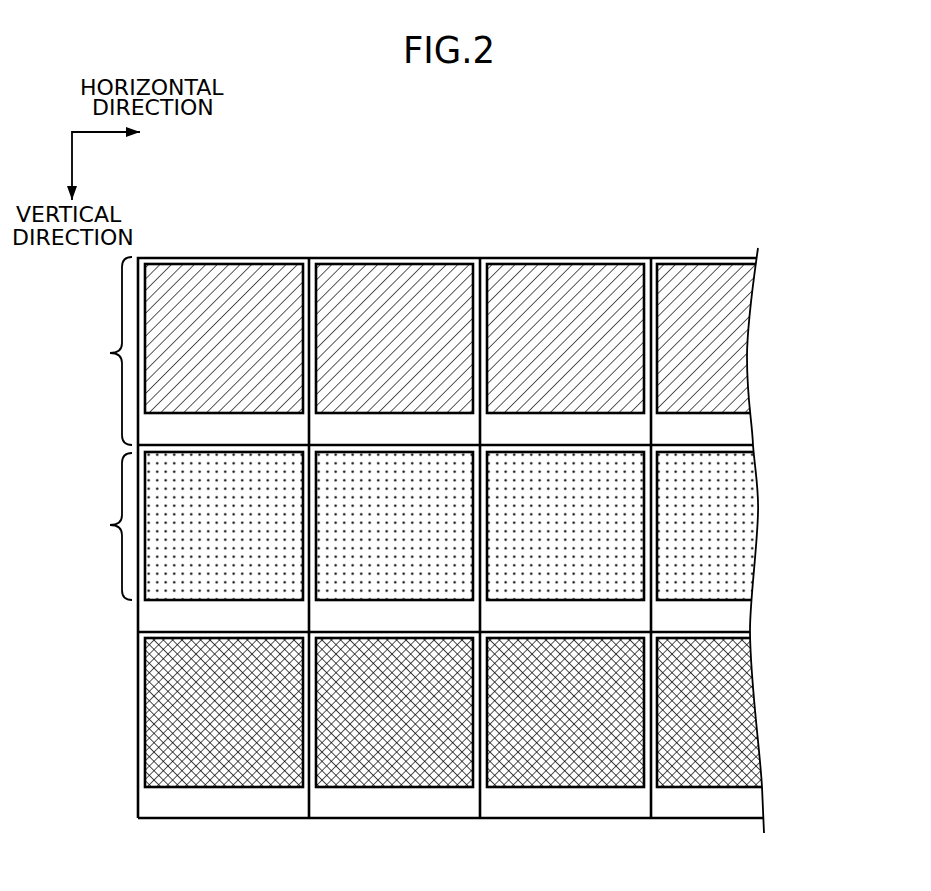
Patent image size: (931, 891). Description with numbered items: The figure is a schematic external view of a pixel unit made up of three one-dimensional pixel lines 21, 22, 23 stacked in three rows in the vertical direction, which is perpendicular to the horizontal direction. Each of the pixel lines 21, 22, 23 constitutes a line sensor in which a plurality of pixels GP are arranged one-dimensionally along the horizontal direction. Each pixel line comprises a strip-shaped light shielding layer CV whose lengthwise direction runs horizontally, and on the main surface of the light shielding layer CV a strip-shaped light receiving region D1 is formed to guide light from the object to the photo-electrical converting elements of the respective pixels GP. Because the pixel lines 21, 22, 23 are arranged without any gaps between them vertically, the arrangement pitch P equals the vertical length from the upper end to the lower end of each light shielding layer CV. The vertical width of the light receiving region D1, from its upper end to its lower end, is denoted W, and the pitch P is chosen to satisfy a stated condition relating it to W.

The light receiving region D1 is at (193, 298).
The pixels GP is at (262, 288).
The light shielding layer CV is at (438, 258).
The arrangement pitch P is at (109, 351).
The width of the light receiving region W is at (105, 526).
The pixel line 21 is at (488, 322).
The pixel line 22 is at (775, 446).
The pixel line 23 is at (775, 632).